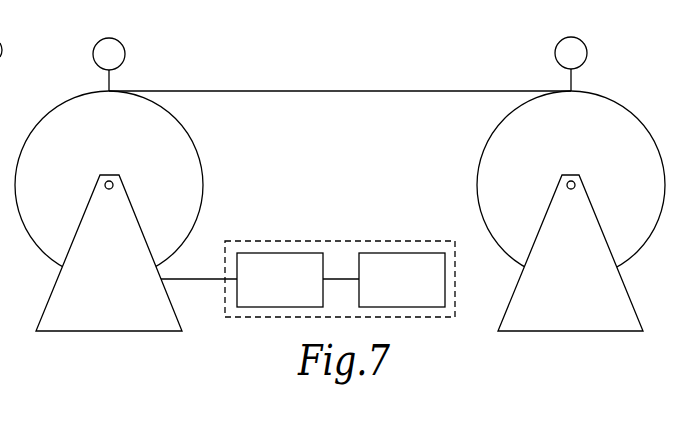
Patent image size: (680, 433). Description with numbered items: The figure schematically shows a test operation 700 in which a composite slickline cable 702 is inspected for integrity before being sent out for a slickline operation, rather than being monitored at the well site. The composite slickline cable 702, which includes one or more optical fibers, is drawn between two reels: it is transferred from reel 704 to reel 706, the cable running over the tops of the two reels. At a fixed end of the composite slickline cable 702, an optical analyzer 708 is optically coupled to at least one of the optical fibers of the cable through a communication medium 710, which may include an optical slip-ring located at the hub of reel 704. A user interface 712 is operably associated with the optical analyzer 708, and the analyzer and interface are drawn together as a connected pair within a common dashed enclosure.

The test operation 700 is at (432, 58).
The composite slickline cable 702 is at (300, 90).
The reel 704 is at (190, 152).
The reel 706 is at (488, 152).
The optical analyzer 708 is at (283, 253).
The communication medium 710 is at (203, 282).
The user interface 712 is at (403, 253).